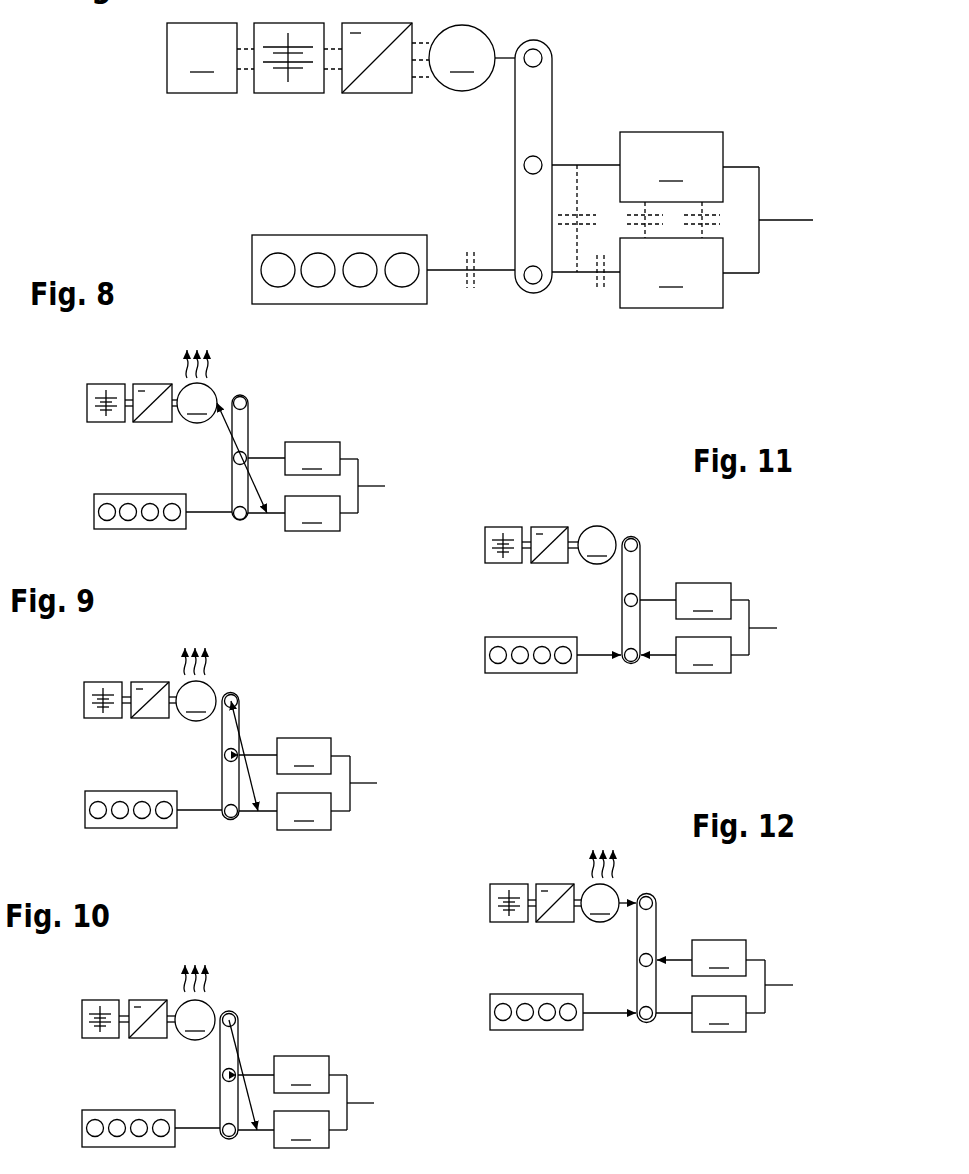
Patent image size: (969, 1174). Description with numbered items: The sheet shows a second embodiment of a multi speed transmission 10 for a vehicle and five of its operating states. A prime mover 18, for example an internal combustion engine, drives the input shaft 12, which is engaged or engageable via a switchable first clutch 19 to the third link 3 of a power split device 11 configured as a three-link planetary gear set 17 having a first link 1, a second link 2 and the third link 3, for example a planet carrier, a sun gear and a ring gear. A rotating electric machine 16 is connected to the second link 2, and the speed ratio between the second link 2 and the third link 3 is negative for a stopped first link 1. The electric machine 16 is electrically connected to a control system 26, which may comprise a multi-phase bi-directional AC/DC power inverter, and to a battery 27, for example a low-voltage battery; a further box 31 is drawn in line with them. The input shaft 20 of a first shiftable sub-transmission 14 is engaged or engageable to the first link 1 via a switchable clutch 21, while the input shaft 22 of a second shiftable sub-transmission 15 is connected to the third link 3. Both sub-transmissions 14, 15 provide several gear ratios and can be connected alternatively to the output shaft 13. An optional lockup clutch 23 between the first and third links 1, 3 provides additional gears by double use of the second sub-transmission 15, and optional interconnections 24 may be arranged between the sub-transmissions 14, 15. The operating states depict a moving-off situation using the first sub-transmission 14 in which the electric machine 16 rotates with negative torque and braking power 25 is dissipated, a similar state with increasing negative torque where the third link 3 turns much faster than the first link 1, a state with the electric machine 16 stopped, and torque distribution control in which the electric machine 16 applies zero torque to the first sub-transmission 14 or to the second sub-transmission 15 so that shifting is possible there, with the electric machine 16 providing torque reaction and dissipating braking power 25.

In FIG. 7, the first link 1 is at (527, 160).
In FIG. 8, the first link 1 is at (248, 455).
In FIG. 9, the first link 1 is at (226, 757).
In FIG. 10, the first link 1 is at (225, 1077).
In FIG. 11, the first link 1 is at (625, 603).
In FIG. 12, the first link 1 is at (640, 965).
In FIG. 7, the second link 2 is at (542, 53).
In FIG. 8, the second link 2 is at (240, 396).
In FIG. 9, the second link 2 is at (240, 700).
In FIG. 10, the second link 2 is at (229, 1012).
In FIG. 11, the second link 2 is at (638, 543).
In FIG. 12, the second link 2 is at (646, 893).
In FIG. 7, the third link 3 is at (523, 289).
In FIG. 8, the third link 3 is at (237, 520).
In FIG. 9, the third link 3 is at (230, 818).
In FIG. 10, the third link 3 is at (223, 1133).
In FIG. 11, the third link 3 is at (632, 665).
In FIG. 12, the third link 3 is at (644, 1025).
In FIG. 7, the multi speed transmission 10 is at (683, 47).
In FIG. 8, the multi speed transmission 10 is at (150, 446).
In FIG. 9, the multi speed transmission 10 is at (205, 745).
In FIG. 10, the multi speed transmission 10 is at (213, 1062).
In FIG. 11, the multi speed transmission 10 is at (583, 598).
In FIG. 12, the multi speed transmission 10 is at (622, 948).
In FIG. 8, the power split device 11 is at (261, 399).
In FIG. 9, the power split device 11 is at (243, 690).
In FIG. 10, the power split device 11 is at (240, 1008).
In FIG. 11, the power split device 11 is at (631, 530).
In FIG. 12, the power split device 11 is at (663, 900).
In FIG. 7, the input shaft 12 is at (446, 268).
In FIG. 8, the input shaft 12 is at (212, 512).
In FIG. 9, the input shaft 12 is at (193, 815).
In FIG. 10, the input shaft 12 is at (192, 1128).
In FIG. 11, the input shaft 12 is at (592, 666).
In FIG. 12, the input shaft 12 is at (613, 1020).
In FIG. 7, the output shaft 13 is at (787, 220).
In FIG. 8, the output shaft 13 is at (370, 484).
In FIG. 9, the output shaft 13 is at (362, 783).
In FIG. 10, the output shaft 13 is at (360, 1103).
In FIG. 11, the output shaft 13 is at (762, 628).
In FIG. 12, the output shaft 13 is at (778, 985).
In FIG. 7, the first shiftable sub-transmission 14 is at (671, 167).
In FIG. 8, the first shiftable sub-transmission 14 is at (312, 458).
In FIG. 9, the first shiftable sub-transmission 14 is at (304, 756).
In FIG. 10, the first shiftable sub-transmission 14 is at (301, 1074).
In FIG. 11, the first shiftable sub-transmission 14 is at (703, 601).
In FIG. 12, the first shiftable sub-transmission 14 is at (719, 958).
In FIG. 7, the second shiftable sub-transmission 15 is at (671, 273).
In FIG. 8, the second shiftable sub-transmission 15 is at (312, 513).
In FIG. 9, the second shiftable sub-transmission 15 is at (304, 811).
In FIG. 10, the second shiftable sub-transmission 15 is at (301, 1129).
In FIG. 11, the second shiftable sub-transmission 15 is at (703, 655).
In FIG. 12, the second shiftable sub-transmission 15 is at (719, 1014).
In FIG. 7, the electric machine 16 is at (462, 58).
In FIG. 8, the electric machine 16 is at (197, 403).
In FIG. 9, the electric machine 16 is at (196, 701).
In FIG. 10, the electric machine 16 is at (195, 1020).
In FIG. 11, the electric machine 16 is at (597, 545).
In FIG. 12, the electric machine 16 is at (608, 903).
In FIG. 7, the planetary gear set 17 is at (562, 84).
In FIG. 7, the prime mover 18 is at (352, 242).
In FIG. 8, the prime mover 18 is at (100, 497).
In FIG. 9, the prime mover 18 is at (92, 797).
In FIG. 10, the prime mover 18 is at (92, 1115).
In FIG. 11, the prime mover 18 is at (527, 666).
In FIG. 12, the prime mover 18 is at (531, 1026).
In FIG. 7, the first clutch 19 is at (478, 250).
In FIG. 7, the input shaft of the first sub-transmission 20 is at (587, 165).
In FIG. 8, the input shaft of the first sub-transmission 20 is at (303, 426).
In FIG. 9, the input shaft of the first sub-transmission 20 is at (262, 755).
In FIG. 10, the input shaft of the first sub-transmission 20 is at (258, 1075).
In FIG. 11, the input shaft of the first sub-transmission 20 is at (655, 600).
In FIG. 12, the input shaft of the first sub-transmission 20 is at (679, 956).
In FIG. 7, the clutch 21 is at (598, 292).
In FIG. 7, the input shaft of the second sub-transmission 22 is at (609, 280).
In FIG. 8, the input shaft of the second sub-transmission 22 is at (275, 515).
In FIG. 9, the input shaft of the second sub-transmission 22 is at (268, 817).
In FIG. 10, the input shaft of the second sub-transmission 22 is at (266, 1133).
In FIG. 11, the input shaft of the second sub-transmission 22 is at (660, 666).
In FIG. 12, the input shaft of the second sub-transmission 22 is at (673, 1020).
In FIG. 7, the lockup clutch 23 is at (562, 228).
In FIG. 7, the interconnections 24 is at (665, 231).
In FIG. 7, the braking power 25 is at (477, 12).
In FIG. 8, the braking power 25 is at (185, 368).
In FIG. 9, the braking power 25 is at (183, 668).
In FIG. 10, the braking power 25 is at (182, 985).
In FIG. 12, the braking power 25 is at (616, 855).
In FIG. 7, the control system 26 is at (355, 23).
In FIG. 8, the control system 26 is at (145, 384).
In FIG. 9, the control system 26 is at (145, 682).
In FIG. 10, the control system 26 is at (145, 1000).
In FIG. 11, the control system 26 is at (548, 527).
In FIG. 12, the control system 26 is at (555, 884).
In FIG. 7, the battery 27 is at (285, 23).
In FIG. 8, the battery 27 is at (105, 384).
In FIG. 9, the battery 27 is at (102, 682).
In FIG. 10, the battery 27 is at (100, 1000).
In FIG. 11, the battery 27 is at (503, 527).
In FIG. 12, the battery 27 is at (510, 884).
In FIG. 7, the control unit 31 is at (202, 58).